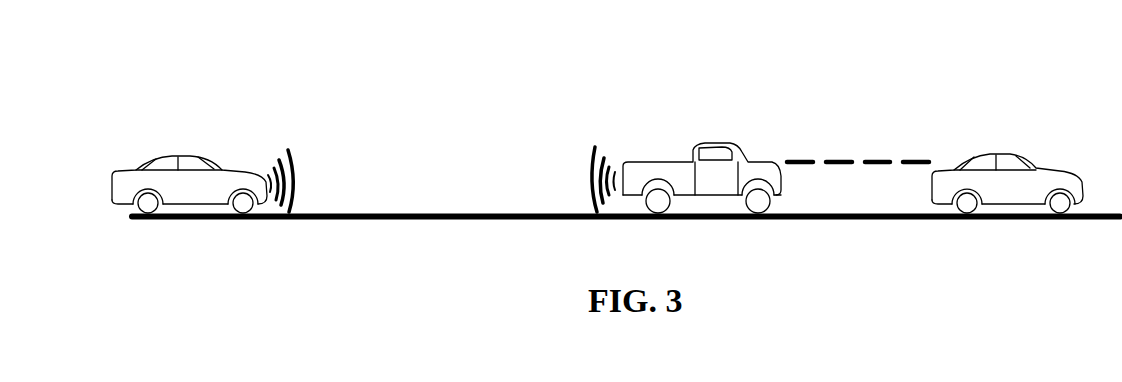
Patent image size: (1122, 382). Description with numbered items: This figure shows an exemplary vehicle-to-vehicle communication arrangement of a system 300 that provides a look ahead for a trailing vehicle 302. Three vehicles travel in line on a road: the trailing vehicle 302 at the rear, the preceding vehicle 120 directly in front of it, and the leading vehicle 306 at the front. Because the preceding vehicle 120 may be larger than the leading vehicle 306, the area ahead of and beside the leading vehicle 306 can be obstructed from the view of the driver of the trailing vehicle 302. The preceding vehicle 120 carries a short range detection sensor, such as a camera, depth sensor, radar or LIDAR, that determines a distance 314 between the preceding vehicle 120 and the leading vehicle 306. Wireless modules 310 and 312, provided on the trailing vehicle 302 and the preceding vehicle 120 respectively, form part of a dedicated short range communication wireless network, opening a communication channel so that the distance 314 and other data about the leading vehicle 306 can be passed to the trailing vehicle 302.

The system 300 is at (758, 63).
The trailing vehicle 302 is at (182, 158).
The wireless module 310 is at (293, 152).
The wireless module 312 is at (592, 148).
The preceding vehicle 120 is at (697, 145).
The distance 314 is at (803, 160).
The leading vehicle 306 is at (1000, 152).